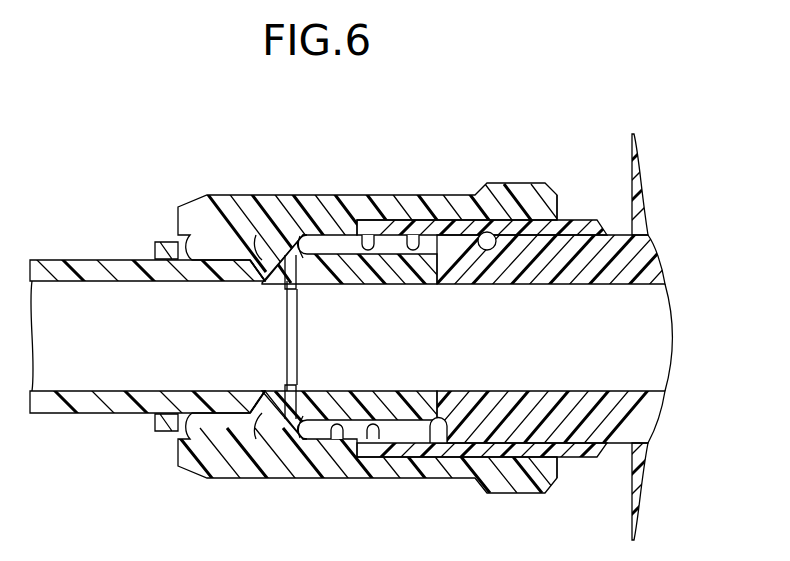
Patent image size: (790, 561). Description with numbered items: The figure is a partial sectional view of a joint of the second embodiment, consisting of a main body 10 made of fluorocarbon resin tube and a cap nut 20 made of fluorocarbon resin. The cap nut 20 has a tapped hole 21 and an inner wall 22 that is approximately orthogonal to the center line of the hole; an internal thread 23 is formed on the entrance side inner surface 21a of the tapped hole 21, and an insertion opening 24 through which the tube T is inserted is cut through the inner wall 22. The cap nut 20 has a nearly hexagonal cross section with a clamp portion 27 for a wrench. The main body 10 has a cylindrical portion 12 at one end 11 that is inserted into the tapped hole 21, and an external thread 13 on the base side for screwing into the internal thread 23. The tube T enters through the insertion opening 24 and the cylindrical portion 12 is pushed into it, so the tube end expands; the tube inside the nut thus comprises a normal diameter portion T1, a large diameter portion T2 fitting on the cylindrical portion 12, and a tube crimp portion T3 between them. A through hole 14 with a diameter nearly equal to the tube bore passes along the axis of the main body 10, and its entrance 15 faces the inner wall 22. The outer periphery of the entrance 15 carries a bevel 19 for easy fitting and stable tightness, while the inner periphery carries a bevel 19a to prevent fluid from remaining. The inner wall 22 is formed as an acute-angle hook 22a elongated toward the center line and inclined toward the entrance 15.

The tube T is at (70, 258).
The normal diameter portion T1 is at (79, 413).
The large diameter portion T2 is at (410, 432).
The tube crimp portion T3 is at (251, 432).
The main body 10 is at (600, 200).
The end 11 is at (337, 438).
The cylindrical portion 12 is at (373, 440).
The external thread 13 is at (571, 221).
The through hole 14 is at (666, 292).
The entrance 15 is at (280, 277).
The bevel 19 is at (290, 240).
The bevel 19a is at (298, 292).
The cap nut 20 is at (270, 188).
The tapped hole 21 is at (368, 243).
The inner surface 21a is at (413, 243).
The inner wall 22 is at (238, 212).
The acute-angle hook 22a is at (214, 284).
The internal thread 23 is at (488, 232).
The insertion opening 24 is at (186, 246).
The clamp portion 27 is at (437, 215).